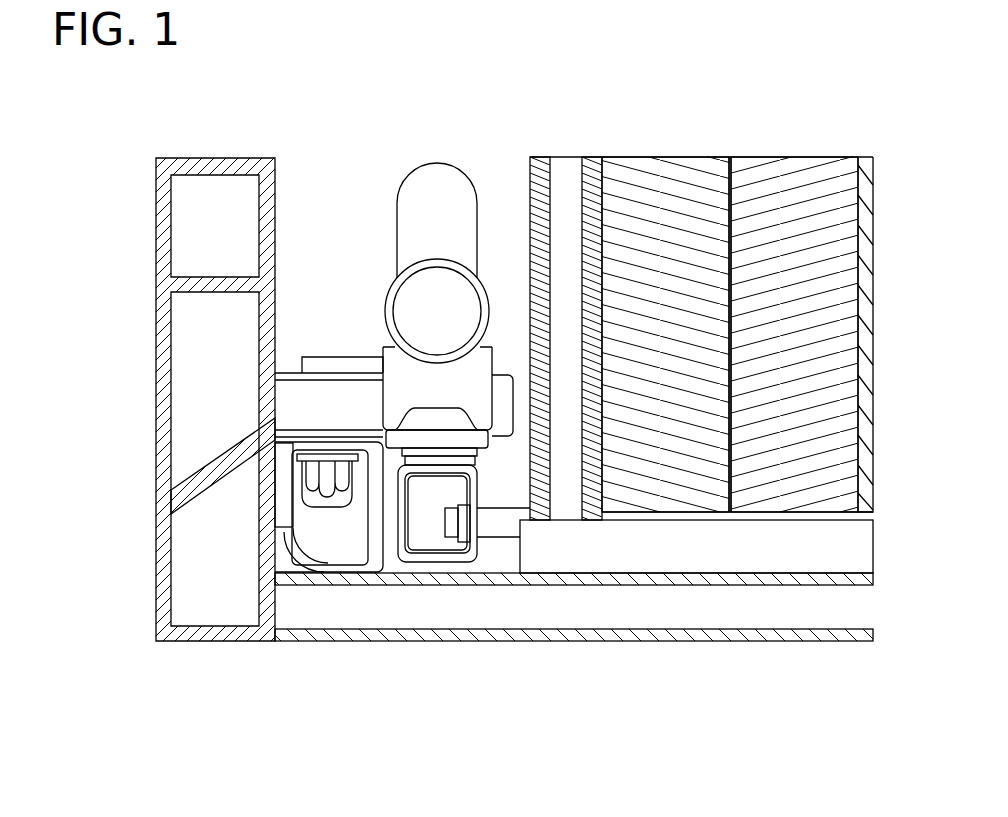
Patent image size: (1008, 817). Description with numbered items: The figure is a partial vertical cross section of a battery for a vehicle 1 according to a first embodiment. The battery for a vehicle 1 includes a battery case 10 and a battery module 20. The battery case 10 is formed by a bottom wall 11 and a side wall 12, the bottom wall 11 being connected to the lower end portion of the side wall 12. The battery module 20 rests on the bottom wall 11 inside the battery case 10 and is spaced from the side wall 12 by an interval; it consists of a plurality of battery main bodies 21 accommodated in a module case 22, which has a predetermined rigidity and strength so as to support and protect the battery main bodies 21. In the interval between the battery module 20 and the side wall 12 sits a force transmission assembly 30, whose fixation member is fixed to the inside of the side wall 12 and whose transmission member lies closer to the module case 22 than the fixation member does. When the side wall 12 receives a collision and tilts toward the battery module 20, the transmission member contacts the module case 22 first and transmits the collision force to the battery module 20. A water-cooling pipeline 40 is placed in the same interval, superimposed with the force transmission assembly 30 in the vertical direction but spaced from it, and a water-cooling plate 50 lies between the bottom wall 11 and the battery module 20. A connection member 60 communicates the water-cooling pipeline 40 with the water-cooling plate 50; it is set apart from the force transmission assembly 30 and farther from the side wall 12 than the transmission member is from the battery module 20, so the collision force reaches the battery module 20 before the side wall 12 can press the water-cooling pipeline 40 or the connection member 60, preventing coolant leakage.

The battery for a vehicle 1 is at (143, 311).
The battery case 10 is at (402, 738).
The bottom wall 11 is at (418, 641).
The side wall 12 is at (253, 641).
The battery module 20 is at (668, 62).
The battery main body 21 is at (642, 202).
The module case 22 is at (580, 190).
The force transmission assembly 30 is at (342, 412).
The water-cooling pipeline 40 is at (453, 225).
The water-cooling plate 50 is at (502, 522).
The connection member 60 is at (480, 378).